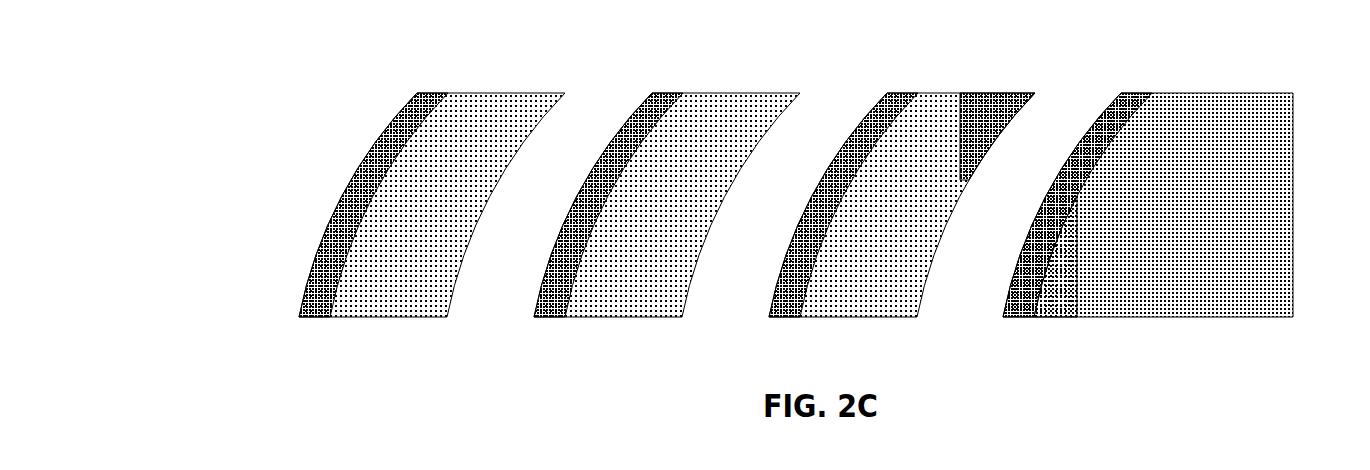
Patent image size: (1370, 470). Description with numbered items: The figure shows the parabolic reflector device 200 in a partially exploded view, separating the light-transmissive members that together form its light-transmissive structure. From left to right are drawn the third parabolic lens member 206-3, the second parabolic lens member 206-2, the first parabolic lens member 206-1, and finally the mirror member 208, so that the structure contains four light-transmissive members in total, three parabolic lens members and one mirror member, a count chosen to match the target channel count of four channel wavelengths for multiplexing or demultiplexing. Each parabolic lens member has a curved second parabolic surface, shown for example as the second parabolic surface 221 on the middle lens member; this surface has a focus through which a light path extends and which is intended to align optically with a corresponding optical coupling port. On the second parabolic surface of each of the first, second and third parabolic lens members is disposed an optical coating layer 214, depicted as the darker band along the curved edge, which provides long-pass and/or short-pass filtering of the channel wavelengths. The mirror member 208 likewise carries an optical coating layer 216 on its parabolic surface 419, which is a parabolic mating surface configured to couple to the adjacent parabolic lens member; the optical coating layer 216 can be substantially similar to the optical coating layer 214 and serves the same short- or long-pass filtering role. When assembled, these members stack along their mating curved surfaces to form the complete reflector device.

The parabolic reflector device 200 is at (439, 58).
The first parabolic lens member 206-1 is at (832, 311).
The second parabolic lens member 206-2 is at (595, 312).
The third parabolic lens member 206-3 is at (358, 311).
The optical coating layer 214 is at (367, 143).
The optical coating layer 216 is at (1088, 129).
The second parabolic surface 221 is at (573, 247).
The parabolic surface 419 is at (1046, 243).
The mirror member 208 is at (1178, 304).